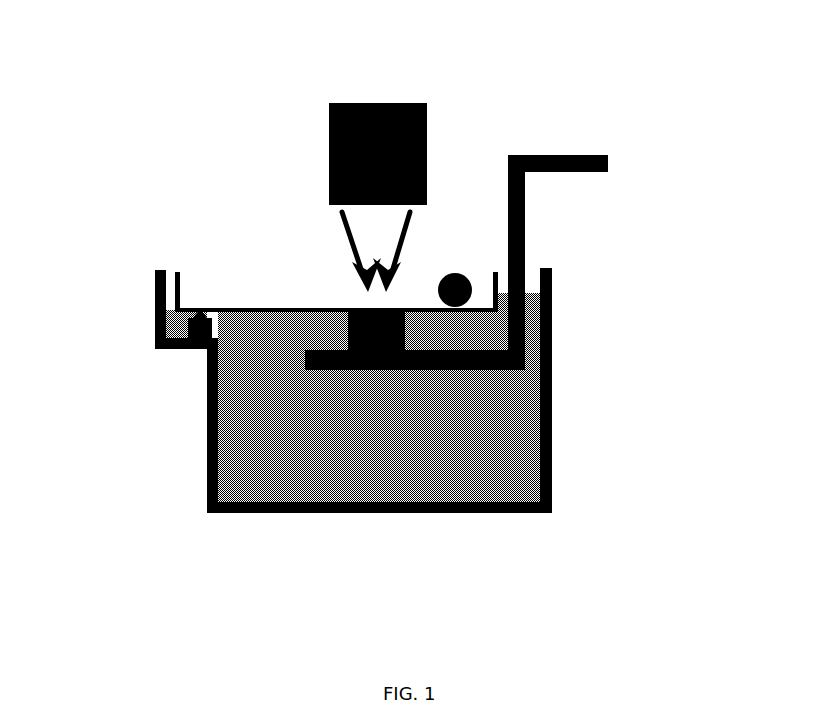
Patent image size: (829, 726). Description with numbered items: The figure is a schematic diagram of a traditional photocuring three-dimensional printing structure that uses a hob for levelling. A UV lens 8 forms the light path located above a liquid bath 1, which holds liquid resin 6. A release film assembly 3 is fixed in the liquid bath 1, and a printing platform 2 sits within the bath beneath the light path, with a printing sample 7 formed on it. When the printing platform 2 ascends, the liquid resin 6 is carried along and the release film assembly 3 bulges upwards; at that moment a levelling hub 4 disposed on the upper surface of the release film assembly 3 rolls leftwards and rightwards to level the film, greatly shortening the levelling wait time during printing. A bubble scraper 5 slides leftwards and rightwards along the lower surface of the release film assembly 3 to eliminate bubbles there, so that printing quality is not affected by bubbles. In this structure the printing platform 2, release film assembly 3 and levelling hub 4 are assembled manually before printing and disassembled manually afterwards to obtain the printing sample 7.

The liquid bath 1 is at (552, 423).
The printing platform 2 is at (525, 228).
The release film assembly 3 is at (277, 310).
The levelling hub 4 is at (458, 272).
The bubble scraper 5 is at (190, 325).
The liquid resin 6 is at (423, 445).
The printing sample 7 is at (358, 318).
The UV lens 8 is at (350, 163).